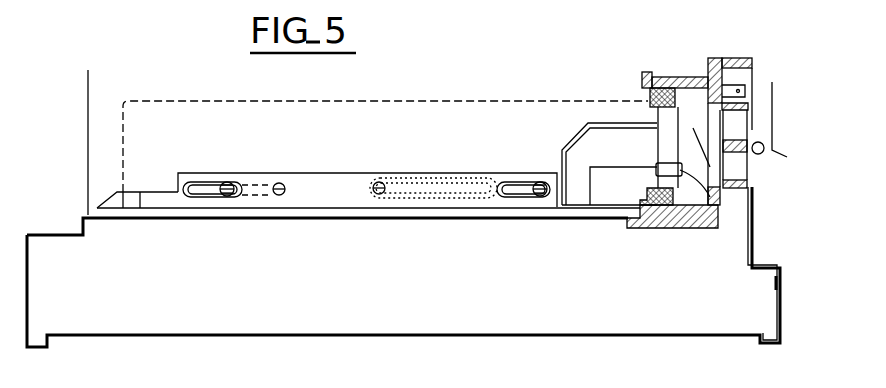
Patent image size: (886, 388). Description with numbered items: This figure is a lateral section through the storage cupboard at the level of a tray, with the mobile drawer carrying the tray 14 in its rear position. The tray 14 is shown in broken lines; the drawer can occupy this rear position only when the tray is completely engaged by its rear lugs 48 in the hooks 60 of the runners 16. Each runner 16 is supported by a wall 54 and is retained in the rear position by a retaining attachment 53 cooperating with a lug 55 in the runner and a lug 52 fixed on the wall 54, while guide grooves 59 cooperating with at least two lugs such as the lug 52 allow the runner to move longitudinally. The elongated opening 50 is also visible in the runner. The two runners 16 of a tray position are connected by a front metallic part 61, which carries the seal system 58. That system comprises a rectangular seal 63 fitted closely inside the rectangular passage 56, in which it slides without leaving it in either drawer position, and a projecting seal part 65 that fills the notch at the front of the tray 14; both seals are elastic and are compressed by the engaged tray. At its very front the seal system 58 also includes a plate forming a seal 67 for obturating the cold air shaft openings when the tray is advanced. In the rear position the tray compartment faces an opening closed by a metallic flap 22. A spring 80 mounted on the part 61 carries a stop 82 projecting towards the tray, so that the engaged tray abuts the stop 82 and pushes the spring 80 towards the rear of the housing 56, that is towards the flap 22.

The tray 14 is at (358, 101).
The wall 54 is at (107, 92).
The hooks 60 is at (107, 210).
The rear lugs 48 is at (130, 210).
The runners 16 is at (327, 200).
The guide grooves 59 is at (190, 178).
The lug 52 is at (226, 197).
The retaining attachments 53 is at (263, 183).
The lug 55 is at (285, 182).
The elongated slot 50 is at (403, 180).
The front metallic part 61 is at (657, 144).
The seal system 58 is at (668, 88).
The seal 67 is at (690, 110).
The metallic flap 22 is at (752, 133).
The spring 80 is at (752, 168).
The stop 82 is at (730, 203).
The seal part 65 is at (652, 232).
The rectangular seal 63 is at (672, 232).
The rectangular passage 56 is at (708, 232).